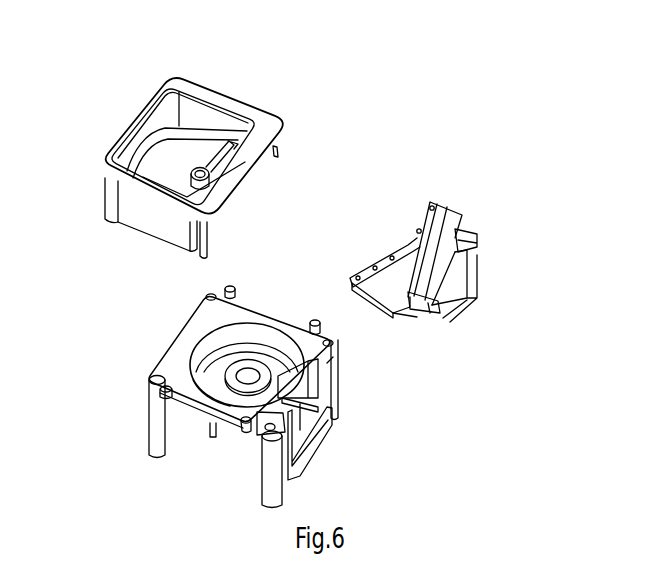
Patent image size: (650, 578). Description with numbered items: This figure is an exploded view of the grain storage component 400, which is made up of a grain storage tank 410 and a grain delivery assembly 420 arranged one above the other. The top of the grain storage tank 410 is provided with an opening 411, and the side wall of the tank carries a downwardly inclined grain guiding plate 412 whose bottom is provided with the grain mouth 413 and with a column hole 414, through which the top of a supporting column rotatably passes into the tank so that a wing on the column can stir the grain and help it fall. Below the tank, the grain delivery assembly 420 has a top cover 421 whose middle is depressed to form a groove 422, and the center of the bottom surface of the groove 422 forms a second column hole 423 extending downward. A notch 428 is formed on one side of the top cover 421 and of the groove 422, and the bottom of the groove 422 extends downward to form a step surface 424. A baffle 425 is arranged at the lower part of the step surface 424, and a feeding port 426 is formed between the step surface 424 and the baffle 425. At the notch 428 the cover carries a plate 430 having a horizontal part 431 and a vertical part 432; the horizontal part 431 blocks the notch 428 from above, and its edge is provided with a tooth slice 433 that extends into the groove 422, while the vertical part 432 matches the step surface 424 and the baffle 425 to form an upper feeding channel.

The grain storage component 400 is at (343, 177).
The grain storage tank 410 is at (152, 226).
The opening 411 is at (167, 97).
The grain guiding plate 412 is at (157, 153).
The grain mouth 413 is at (178, 172).
The column hole 414 is at (205, 174).
The grain delivery assembly 420 is at (177, 377).
The top cover 421 is at (207, 330).
The groove 422 is at (258, 345).
The second column hole 423 is at (247, 378).
The step surface 424 is at (305, 390).
The baffle 425 is at (313, 440).
The feeding port 426 is at (297, 437).
The notch 428 is at (258, 433).
The plate 430 is at (482, 236).
The horizontal part 431 is at (440, 227).
The vertical part 432 is at (455, 315).
The tooth slice 433 is at (384, 260).